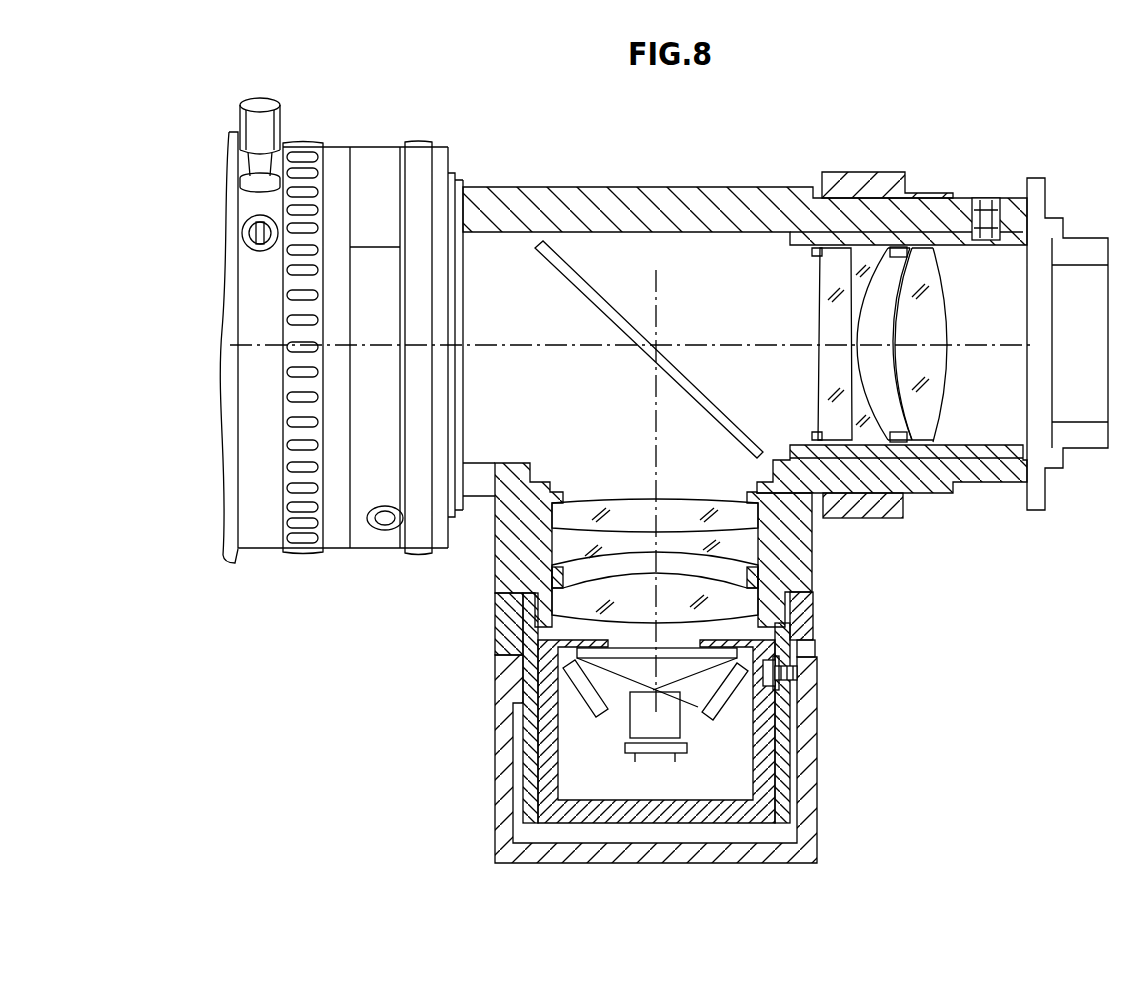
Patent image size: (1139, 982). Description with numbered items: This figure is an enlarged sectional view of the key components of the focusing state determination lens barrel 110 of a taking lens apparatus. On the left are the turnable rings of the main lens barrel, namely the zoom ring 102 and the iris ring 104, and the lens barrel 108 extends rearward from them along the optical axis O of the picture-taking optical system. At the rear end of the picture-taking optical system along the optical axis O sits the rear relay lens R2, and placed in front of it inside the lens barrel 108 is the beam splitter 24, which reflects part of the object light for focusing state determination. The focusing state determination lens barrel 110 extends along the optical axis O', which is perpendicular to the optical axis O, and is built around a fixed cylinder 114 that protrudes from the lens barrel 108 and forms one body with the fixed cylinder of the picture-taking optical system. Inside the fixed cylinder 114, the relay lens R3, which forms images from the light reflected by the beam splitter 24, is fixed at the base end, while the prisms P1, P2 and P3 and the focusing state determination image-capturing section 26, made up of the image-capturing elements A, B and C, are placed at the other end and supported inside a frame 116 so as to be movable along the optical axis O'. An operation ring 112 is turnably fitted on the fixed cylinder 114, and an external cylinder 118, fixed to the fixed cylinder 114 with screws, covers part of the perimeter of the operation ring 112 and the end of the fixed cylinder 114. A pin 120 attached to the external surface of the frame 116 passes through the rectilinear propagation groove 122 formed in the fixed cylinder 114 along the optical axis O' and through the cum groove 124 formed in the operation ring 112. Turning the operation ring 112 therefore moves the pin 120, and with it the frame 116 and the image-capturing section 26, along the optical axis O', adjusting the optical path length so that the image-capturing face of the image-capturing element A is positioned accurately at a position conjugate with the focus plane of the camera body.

The zoom ring 102 is at (294, 578).
The iris ring 104 is at (430, 575).
The lens barrel 108 is at (746, 170).
The focusing state determination lens barrel 110 is at (884, 668).
The operation ring 112 is at (503, 622).
The fixed cylinder 114 is at (810, 572).
The frame 116 is at (783, 790).
The external cylinder 118 is at (808, 812).
The pin 120 is at (797, 672).
The rectilinear propagation groove 122 is at (797, 682).
The cum groove 124 is at (815, 668).
The beam splitter 24 is at (728, 412).
The focusing state determination image-capturing section 26 is at (706, 736).
The optical axis O is at (630, 313).
The optical axis of the focusing state determination optical system O' is at (688, 452).
The rear relay lens R2 is at (947, 329).
The relay lens R3 is at (635, 541).
The prism P1 is at (712, 686).
The prism P2 is at (615, 680).
The prism P3 is at (653, 725).
The image-capturing element A is at (667, 755).
The image-capturing element B is at (588, 705).
The image-capturing element C is at (748, 700).